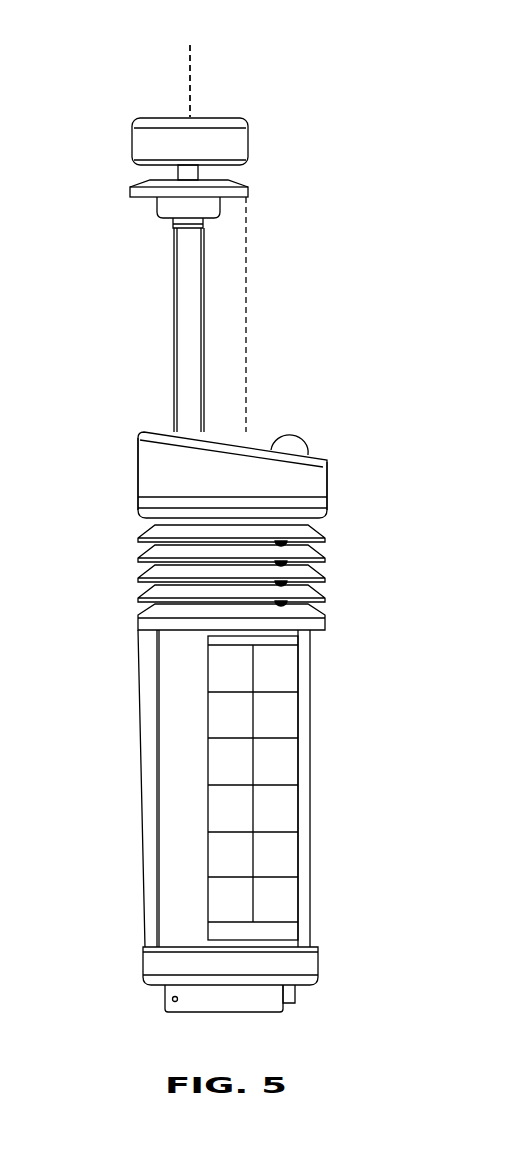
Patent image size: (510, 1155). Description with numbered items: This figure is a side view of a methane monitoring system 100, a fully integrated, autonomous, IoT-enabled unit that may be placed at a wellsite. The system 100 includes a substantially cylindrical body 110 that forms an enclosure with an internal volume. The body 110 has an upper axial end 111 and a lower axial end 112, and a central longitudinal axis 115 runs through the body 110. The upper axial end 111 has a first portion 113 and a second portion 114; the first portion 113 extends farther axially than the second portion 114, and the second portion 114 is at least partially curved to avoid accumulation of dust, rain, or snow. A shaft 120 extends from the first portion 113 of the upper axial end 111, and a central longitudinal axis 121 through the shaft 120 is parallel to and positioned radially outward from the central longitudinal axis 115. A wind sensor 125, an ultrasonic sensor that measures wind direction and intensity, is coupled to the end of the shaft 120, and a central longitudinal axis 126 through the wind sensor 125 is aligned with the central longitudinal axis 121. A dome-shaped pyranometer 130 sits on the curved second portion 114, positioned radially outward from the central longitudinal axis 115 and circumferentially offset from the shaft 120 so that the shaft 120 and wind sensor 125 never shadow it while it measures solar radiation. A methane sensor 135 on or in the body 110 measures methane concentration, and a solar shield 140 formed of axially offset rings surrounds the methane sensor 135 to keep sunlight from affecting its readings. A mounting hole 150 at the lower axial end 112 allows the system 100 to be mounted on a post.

The methane monitoring system 100 is at (99, 74).
The body 110 is at (311, 758).
The upper axial end 111 is at (256, 440).
The lower axial end 112 is at (305, 988).
The first portion 113 is at (162, 432).
The second portion 114 is at (322, 456).
The central longitudinal axis 115 is at (246, 252).
The shaft 120 is at (174, 300).
The central longitudinal axis 121 is at (190, 63).
The wind sensor 125 is at (248, 143).
The central longitudinal axis 126 is at (232, 69).
The pyranometer 130 is at (299, 432).
The methane sensor 135 is at (131, 575).
The solar shield 140 is at (340, 517).
The mounting hole 150 is at (165, 997).